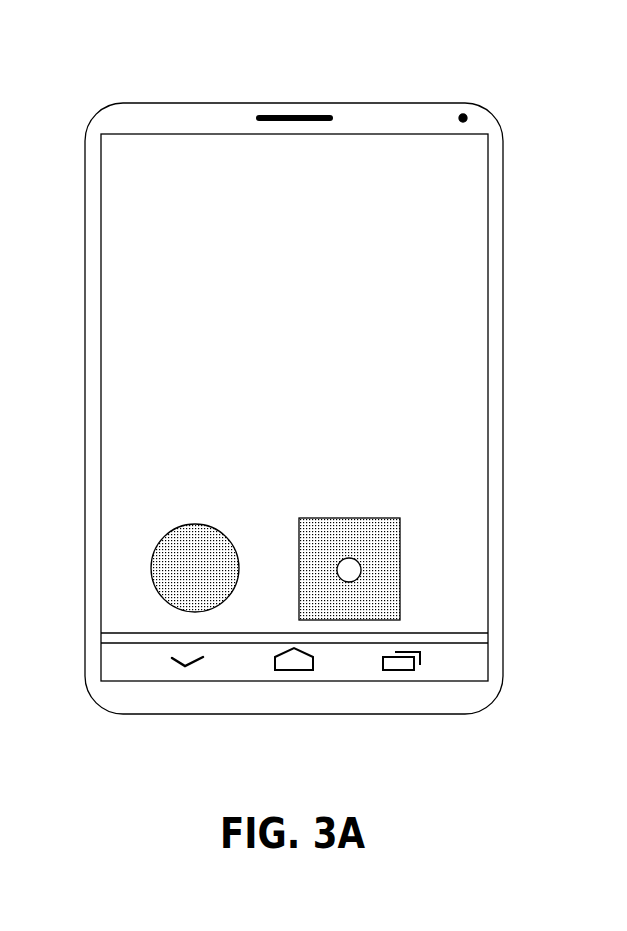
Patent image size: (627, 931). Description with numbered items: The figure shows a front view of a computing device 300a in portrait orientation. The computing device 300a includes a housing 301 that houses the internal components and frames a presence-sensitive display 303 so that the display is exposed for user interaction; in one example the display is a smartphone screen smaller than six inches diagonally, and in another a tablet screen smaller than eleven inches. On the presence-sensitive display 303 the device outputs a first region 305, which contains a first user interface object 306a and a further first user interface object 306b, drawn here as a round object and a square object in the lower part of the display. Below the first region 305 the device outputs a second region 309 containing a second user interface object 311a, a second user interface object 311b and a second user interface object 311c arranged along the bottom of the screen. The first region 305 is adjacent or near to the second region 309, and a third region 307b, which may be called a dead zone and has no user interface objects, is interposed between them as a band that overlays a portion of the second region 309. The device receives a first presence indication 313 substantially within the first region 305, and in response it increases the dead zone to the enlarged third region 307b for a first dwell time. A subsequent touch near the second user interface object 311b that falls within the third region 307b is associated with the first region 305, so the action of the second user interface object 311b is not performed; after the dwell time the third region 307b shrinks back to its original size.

The computing device 300a is at (273, 50).
The housing 301 is at (494, 440).
The presence-sensitive display 303 is at (488, 200).
The first region 305 is at (278, 392).
The first user interface object 306a is at (195, 568).
The first user interface object 306b is at (352, 517).
The third region 307b is at (112, 635).
The second region 309 is at (479, 660).
The second user interface object 311a is at (185, 666).
The second user interface object 311b is at (293, 670).
The second user interface object 311c is at (410, 670).
The first presence indication 313 is at (349, 570).